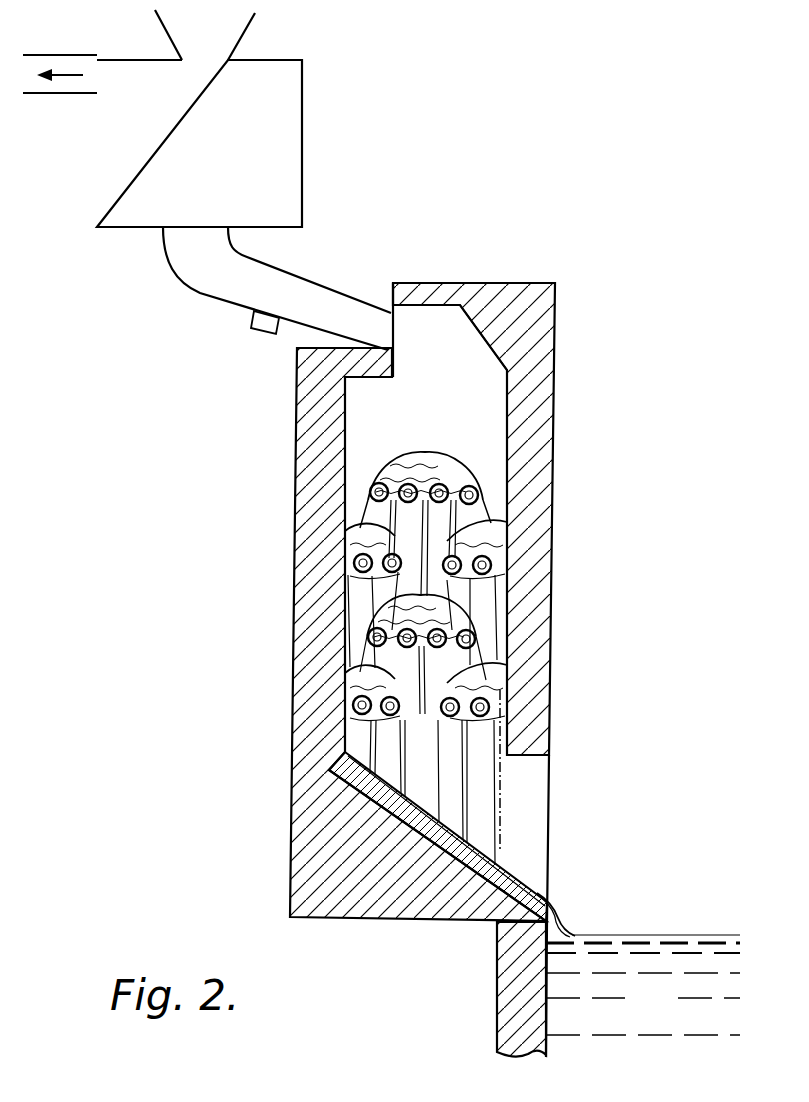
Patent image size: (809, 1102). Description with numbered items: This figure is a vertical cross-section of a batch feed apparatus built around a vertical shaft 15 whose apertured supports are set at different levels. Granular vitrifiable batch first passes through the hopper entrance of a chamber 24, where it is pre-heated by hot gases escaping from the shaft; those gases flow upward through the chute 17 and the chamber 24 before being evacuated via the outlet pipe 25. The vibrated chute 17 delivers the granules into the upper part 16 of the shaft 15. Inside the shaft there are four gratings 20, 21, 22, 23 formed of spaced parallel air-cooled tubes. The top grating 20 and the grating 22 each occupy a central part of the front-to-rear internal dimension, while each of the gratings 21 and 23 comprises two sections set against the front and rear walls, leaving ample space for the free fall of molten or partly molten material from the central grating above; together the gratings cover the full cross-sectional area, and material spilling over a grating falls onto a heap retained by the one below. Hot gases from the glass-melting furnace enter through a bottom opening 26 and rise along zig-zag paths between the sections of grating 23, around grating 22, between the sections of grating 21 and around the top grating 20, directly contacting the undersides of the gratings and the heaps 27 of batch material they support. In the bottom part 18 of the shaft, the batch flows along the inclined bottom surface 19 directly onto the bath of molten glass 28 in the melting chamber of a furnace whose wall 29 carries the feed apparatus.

The vertical shaft 15 is at (555, 392).
The upper part of the shaft 16 is at (456, 390).
The chute 17 is at (307, 277).
The bottom part of the shaft 18 is at (431, 749).
The inclined bottom surface 19 is at (517, 880).
The top grating 20 is at (373, 489).
The grating 21 is at (350, 558).
The grating 22 is at (372, 640).
The grating 23 is at (355, 705).
The chamber 24 is at (302, 150).
The outlet pipe 25 is at (60, 95).
The bottom opening 26 is at (537, 818).
The heaps of batch material 27 is at (433, 460).
The bath of molten glass 28 is at (672, 1011).
The wall 29 is at (497, 977).